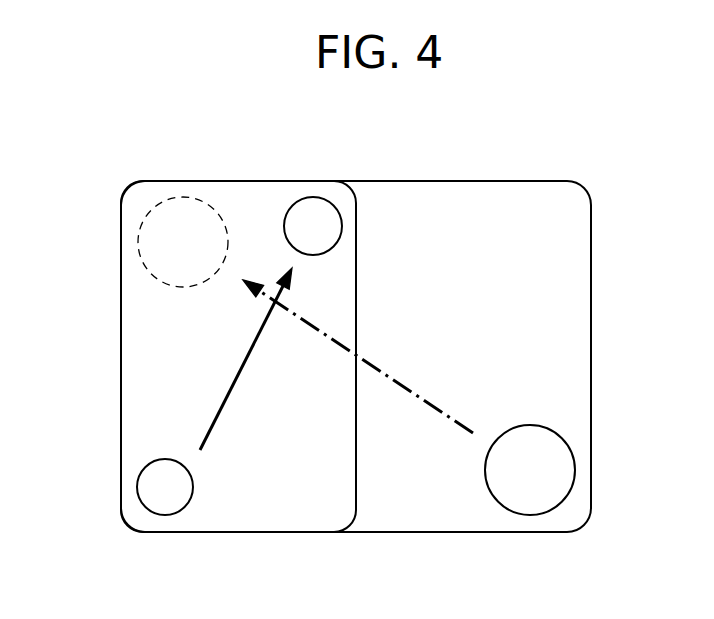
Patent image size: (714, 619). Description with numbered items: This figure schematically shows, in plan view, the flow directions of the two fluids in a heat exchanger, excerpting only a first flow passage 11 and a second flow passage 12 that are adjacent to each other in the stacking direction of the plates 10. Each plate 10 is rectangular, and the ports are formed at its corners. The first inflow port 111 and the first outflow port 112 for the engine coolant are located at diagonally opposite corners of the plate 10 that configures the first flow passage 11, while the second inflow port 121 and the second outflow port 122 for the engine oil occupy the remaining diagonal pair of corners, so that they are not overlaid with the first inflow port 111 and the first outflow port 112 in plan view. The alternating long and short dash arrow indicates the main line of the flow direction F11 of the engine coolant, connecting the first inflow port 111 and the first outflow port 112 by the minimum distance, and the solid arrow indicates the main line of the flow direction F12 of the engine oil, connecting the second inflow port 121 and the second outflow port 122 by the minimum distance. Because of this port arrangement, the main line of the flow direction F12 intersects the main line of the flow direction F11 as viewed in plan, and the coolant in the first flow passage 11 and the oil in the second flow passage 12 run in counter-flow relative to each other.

The plate 10 is at (490, 181).
The first flow passage 11 is at (582, 380).
The second flow passage 12 is at (128, 371).
The first inflow port 111 is at (566, 498).
The first outflow port 112 is at (174, 199).
The second inflow port 121 is at (156, 512).
The second outflow port 122 is at (313, 204).
The flow direction of the engine coolant F11 is at (428, 403).
The flow direction of the engine oil F12 is at (253, 343).